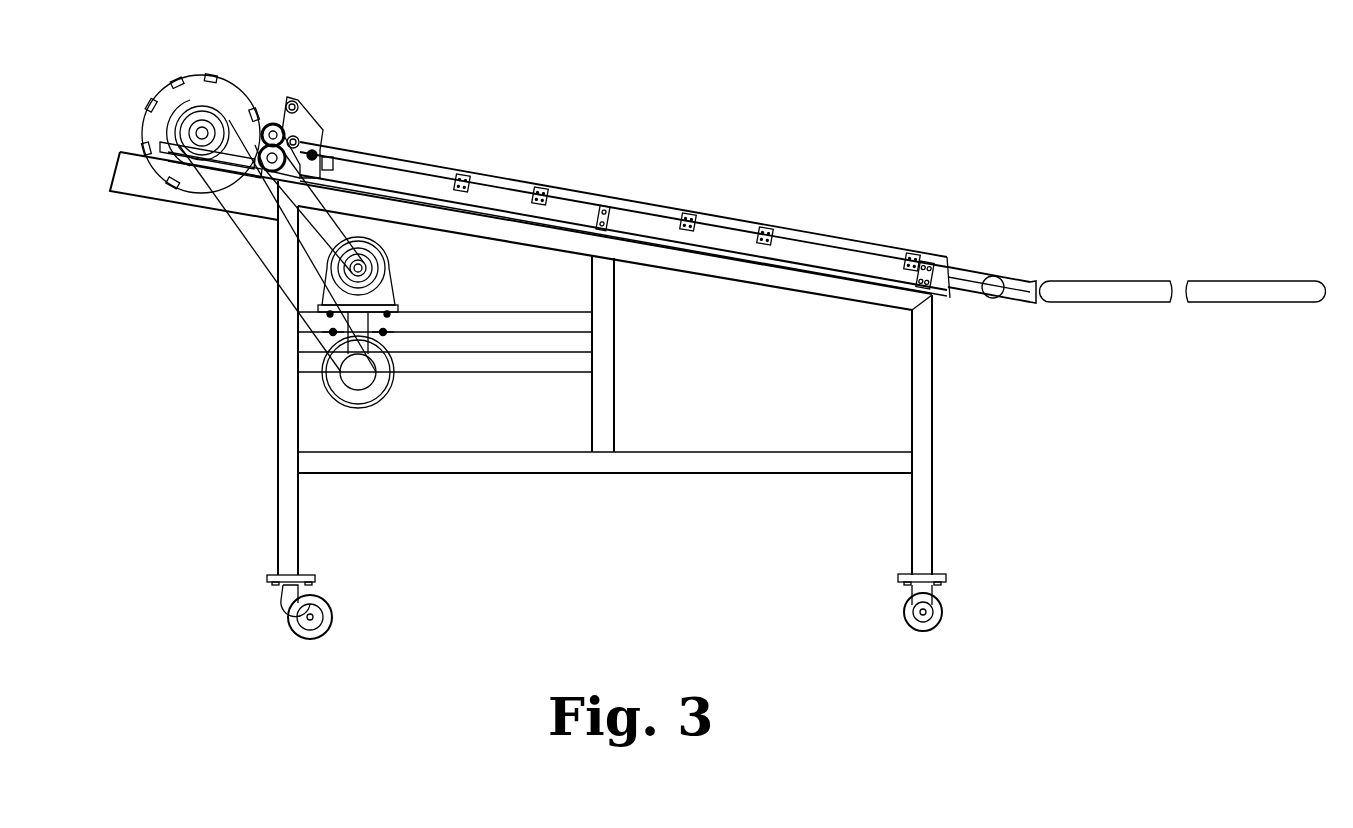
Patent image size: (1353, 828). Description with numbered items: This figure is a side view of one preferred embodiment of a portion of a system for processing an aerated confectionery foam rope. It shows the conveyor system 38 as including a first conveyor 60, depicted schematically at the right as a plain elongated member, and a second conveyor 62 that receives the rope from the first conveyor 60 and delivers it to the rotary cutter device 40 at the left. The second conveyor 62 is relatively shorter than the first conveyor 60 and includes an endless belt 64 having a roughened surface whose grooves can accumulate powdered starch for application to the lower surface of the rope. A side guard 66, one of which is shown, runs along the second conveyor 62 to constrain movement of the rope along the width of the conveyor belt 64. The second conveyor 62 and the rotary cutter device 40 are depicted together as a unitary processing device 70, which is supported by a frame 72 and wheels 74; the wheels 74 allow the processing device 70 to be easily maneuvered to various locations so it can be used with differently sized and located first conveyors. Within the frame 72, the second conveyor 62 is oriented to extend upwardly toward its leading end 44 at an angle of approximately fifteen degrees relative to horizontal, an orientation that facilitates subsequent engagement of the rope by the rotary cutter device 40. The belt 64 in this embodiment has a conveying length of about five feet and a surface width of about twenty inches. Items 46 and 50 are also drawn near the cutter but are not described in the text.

The conveyor system 38 is at (1062, 258).
The rotary cutter device 40 is at (140, 92).
The leading end 44 is at (262, 197).
The pulley assembly 46 is at (272, 128).
The cutting disc 50 is at (210, 93).
The first conveyor 60 is at (1254, 296).
The second conveyor 62 is at (802, 252).
The endless belt 64 is at (965, 268).
The side guard 66 is at (588, 200).
The unitary processing device 70 is at (625, 175).
The frame 72 is at (601, 409).
The wheels 74 is at (324, 612).